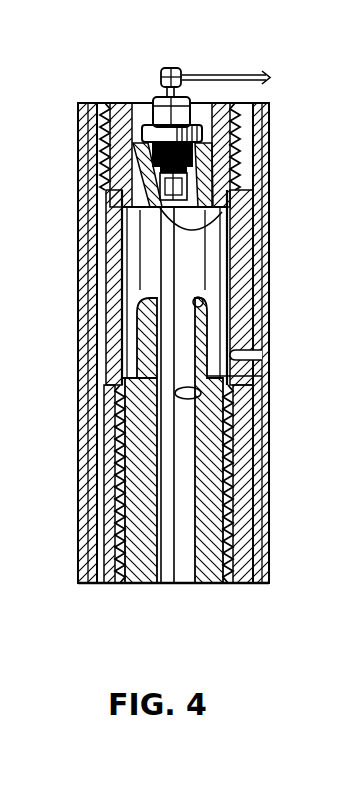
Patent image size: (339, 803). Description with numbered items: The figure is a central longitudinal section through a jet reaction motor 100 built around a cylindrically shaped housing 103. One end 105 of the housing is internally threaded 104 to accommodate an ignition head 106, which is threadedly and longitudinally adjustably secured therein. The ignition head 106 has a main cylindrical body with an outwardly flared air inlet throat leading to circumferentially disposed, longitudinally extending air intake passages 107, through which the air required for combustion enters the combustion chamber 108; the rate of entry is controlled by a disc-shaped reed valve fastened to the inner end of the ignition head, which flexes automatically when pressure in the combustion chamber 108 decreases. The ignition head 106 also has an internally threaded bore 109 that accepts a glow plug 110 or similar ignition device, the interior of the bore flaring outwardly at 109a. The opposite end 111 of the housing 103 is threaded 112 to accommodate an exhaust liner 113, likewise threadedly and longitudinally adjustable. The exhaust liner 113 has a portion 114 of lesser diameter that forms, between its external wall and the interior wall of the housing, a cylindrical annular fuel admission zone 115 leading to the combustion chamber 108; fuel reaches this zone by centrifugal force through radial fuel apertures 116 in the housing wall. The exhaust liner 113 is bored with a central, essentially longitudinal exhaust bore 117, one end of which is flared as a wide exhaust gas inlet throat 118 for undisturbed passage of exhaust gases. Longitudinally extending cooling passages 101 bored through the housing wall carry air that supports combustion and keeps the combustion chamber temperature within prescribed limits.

The jet reaction motor 100 is at (274, 193).
The cooling passages 101 is at (256, 516).
The housing 103 is at (285, 81).
The internal thread 104 is at (256, 138).
The one end of housing 105 is at (72, 105).
The ignition head 106 is at (262, 166).
The air intake passages 107 is at (135, 160).
The combustion chamber 108 is at (177, 264).
The internally threaded bore 109 is at (140, 145).
The outward flare of bore 109a is at (222, 212).
The glow plug 110 is at (222, 244).
The opposite end of housing 111 is at (67, 383).
The thread 112 is at (233, 493).
The exhaust liner 113 is at (212, 435).
The portion of lesser diameter 114 is at (72, 293).
The fuel admission zone 115 is at (210, 330).
The radial fuel apertures 116 is at (262, 358).
The exhaust bore 117 is at (201, 393).
The exhaust gas inlet throat 118 is at (204, 300).